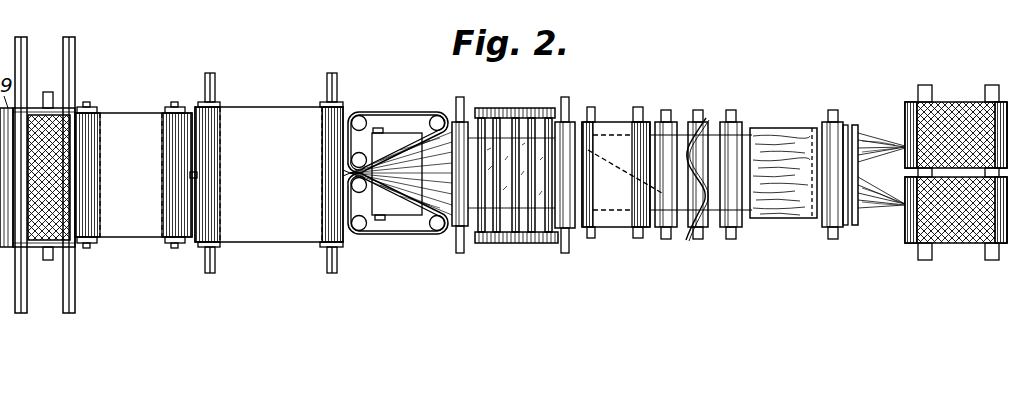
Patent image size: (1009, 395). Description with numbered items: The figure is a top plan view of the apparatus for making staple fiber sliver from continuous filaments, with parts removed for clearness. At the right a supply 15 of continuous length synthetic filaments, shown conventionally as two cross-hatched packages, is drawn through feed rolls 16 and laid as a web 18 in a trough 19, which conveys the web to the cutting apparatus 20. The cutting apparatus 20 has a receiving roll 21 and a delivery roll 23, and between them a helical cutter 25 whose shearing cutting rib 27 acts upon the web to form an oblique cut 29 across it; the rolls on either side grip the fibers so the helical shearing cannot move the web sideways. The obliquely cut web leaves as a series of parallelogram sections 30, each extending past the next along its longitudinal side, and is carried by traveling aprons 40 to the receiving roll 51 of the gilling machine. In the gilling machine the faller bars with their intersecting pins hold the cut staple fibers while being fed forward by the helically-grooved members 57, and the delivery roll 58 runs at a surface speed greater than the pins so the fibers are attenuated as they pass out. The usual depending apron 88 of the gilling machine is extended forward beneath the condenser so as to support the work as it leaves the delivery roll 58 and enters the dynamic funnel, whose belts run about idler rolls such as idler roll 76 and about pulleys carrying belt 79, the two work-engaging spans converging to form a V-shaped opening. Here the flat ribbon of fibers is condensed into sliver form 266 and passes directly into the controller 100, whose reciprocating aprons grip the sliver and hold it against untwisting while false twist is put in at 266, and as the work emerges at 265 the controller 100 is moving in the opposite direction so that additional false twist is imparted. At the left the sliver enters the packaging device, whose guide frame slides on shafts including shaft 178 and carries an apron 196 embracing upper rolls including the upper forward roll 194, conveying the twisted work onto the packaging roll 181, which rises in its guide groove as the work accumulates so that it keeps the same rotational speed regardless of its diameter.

The supply 15 is at (947, 102).
The feed roll 16 is at (843, 223).
The web form 18 is at (792, 137).
The trough 19 is at (775, 128).
The cutting apparatus 20 is at (722, 108).
The receiving roll 21 is at (738, 125).
The delivery roll 23 is at (652, 122).
The helical cutter 25 is at (690, 122).
The cutting rib 27 is at (688, 232).
The oblique cut 29 is at (425, 133).
The parallelogram section 30 is at (580, 157).
The traveling apron 40 is at (621, 151).
The receiving roll 51 is at (573, 223).
The helically-grooved member 57 is at (515, 110).
The delivery roll 58 is at (457, 226).
The idler roll 76 is at (390, 110).
The belt 79 is at (388, 237).
The apron 88 is at (408, 215).
The controller 100 is at (282, 94).
The shaft 178 is at (76, 287).
The packaging roll 181 is at (76, 163).
The upper forward roll 194 is at (100, 238).
The apron 196 is at (136, 174).
The work emergence point 265 is at (190, 181).
The sliver form 266 is at (350, 173).